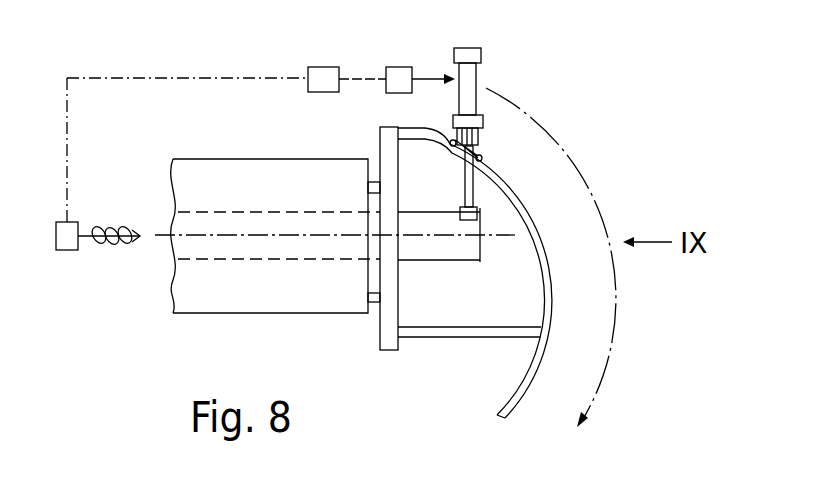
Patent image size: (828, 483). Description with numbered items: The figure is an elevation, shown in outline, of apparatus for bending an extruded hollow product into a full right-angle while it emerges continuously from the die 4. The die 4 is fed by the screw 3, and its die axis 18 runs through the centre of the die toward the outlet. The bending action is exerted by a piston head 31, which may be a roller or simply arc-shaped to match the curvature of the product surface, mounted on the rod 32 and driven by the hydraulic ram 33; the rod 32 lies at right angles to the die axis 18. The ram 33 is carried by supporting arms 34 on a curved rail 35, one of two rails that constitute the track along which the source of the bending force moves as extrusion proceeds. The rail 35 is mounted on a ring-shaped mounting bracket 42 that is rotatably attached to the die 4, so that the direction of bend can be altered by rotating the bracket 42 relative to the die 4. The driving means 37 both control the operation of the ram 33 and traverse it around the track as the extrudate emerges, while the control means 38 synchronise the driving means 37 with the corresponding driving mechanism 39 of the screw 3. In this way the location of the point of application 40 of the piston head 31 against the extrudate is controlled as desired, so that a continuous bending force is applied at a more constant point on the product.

The screw 3 is at (106, 222).
The die 4 is at (203, 157).
The die axis 18 is at (266, 212).
The piston head 31 is at (477, 210).
The rod 32 is at (465, 177).
The ram 33 is at (477, 75).
The supporting arms 34 is at (483, 137).
The rail 35 is at (547, 258).
The driving means 37 is at (395, 67).
The control means 38 is at (322, 67).
The driving mechanism of the screw 39 is at (70, 250).
The point of application 40 is at (466, 225).
The ring-shaped mounting bracket 42 is at (395, 310).